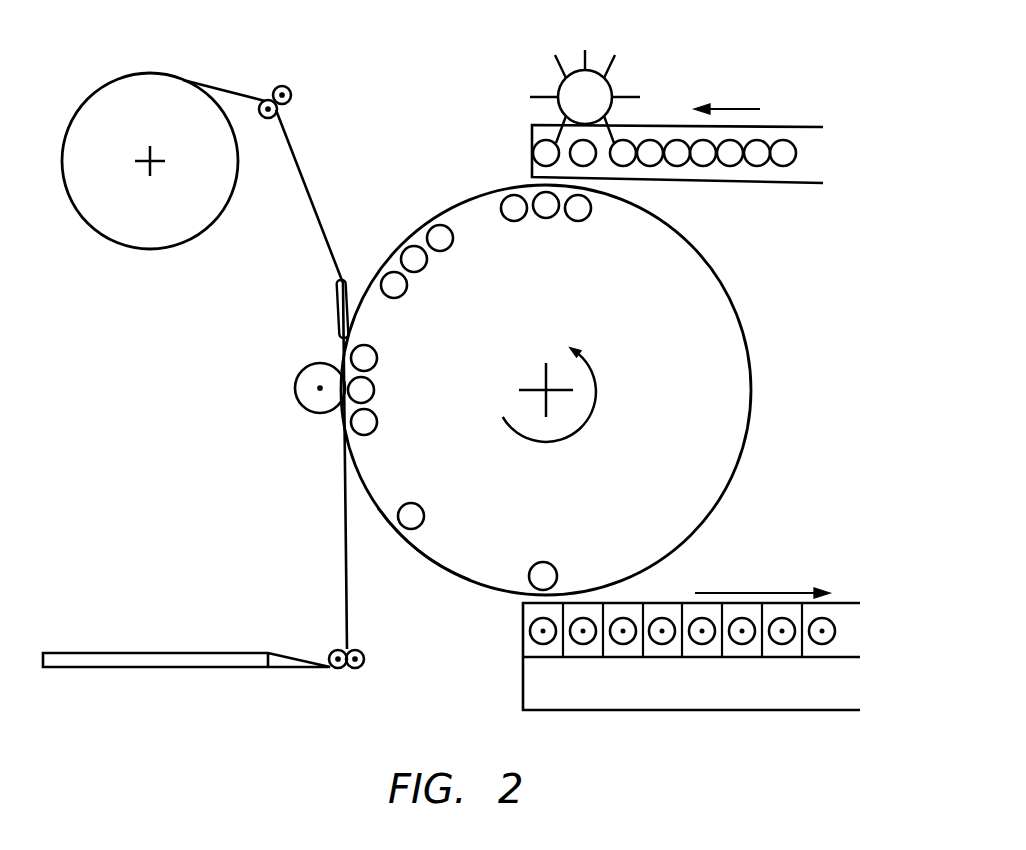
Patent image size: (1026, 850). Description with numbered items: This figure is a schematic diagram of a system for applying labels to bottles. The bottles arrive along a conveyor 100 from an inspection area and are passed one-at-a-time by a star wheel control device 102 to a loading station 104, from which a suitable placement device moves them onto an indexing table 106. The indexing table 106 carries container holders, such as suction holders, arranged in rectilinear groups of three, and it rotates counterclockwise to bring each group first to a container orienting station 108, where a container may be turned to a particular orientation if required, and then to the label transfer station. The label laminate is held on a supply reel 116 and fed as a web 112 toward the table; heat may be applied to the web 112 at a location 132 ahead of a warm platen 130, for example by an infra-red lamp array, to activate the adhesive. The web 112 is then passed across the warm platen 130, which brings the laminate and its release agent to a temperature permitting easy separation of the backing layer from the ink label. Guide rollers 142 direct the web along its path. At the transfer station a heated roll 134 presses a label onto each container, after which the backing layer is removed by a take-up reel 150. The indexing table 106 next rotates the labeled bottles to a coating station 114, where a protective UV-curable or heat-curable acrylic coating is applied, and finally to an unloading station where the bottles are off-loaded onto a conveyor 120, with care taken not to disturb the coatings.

The conveyor 100 is at (650, 125).
The star wheel control device 102 is at (585, 70).
The loading station 104 is at (532, 125).
The indexing table 106 is at (473, 198).
The container orienting station 108 is at (407, 246).
The web 112 is at (220, 84).
The coating station 114 is at (397, 545).
The supply reel 116 is at (80, 112).
The conveyor 120 is at (523, 623).
The warm platen 130 is at (339, 298).
The heating location 132 is at (299, 167).
The heated roll 134 is at (295, 402).
The web guide rollers 142 is at (263, 116).
The take-up reel 150 is at (178, 668).